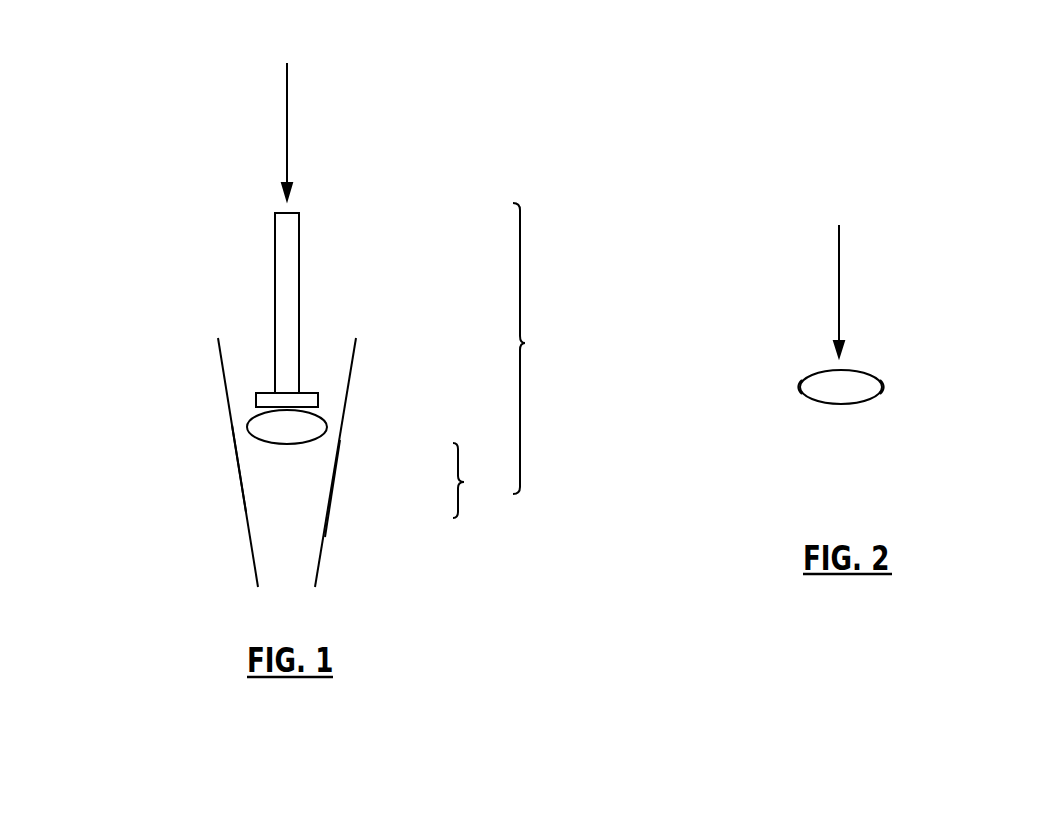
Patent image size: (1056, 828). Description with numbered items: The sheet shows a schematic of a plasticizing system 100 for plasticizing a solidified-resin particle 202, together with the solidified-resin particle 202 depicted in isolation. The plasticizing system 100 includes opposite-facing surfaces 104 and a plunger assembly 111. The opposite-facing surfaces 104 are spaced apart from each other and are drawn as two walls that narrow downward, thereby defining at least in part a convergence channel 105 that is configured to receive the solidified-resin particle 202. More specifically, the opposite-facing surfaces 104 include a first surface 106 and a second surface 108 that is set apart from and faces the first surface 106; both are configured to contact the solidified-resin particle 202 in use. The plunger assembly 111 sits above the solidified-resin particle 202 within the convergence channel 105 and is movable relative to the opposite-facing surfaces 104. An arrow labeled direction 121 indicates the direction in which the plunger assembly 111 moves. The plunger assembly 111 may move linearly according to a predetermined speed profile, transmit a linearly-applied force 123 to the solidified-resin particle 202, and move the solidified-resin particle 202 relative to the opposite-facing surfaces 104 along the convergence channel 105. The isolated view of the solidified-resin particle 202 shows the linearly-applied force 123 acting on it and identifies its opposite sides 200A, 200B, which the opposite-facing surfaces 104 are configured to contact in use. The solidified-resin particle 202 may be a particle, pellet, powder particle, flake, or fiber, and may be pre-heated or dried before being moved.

In FIG. 1, the plasticizing system 100 is at (543, 348).
In FIG. 1, the opposite-facing surfaces 104 is at (482, 480).
In FIG. 1, the convergence channel 105 is at (257, 350).
In FIG. 1, the first surface 106 is at (246, 510).
In FIG. 1, the second surface 108 is at (325, 537).
In FIG. 1, the plunger assembly 111 is at (292, 213).
In FIG. 1, the direction 121 is at (287, 113).
In FIG. 2, the linearly-applied force 123 is at (839, 255).
In FIG. 1, the solidified-resin particle 202 is at (247, 422).
In FIG. 2, the solidified-resin particle 202 is at (848, 405).
In FIG. 2, the opposite side 200A is at (881, 384).
In FIG. 2, the opposite side 200B is at (802, 387).